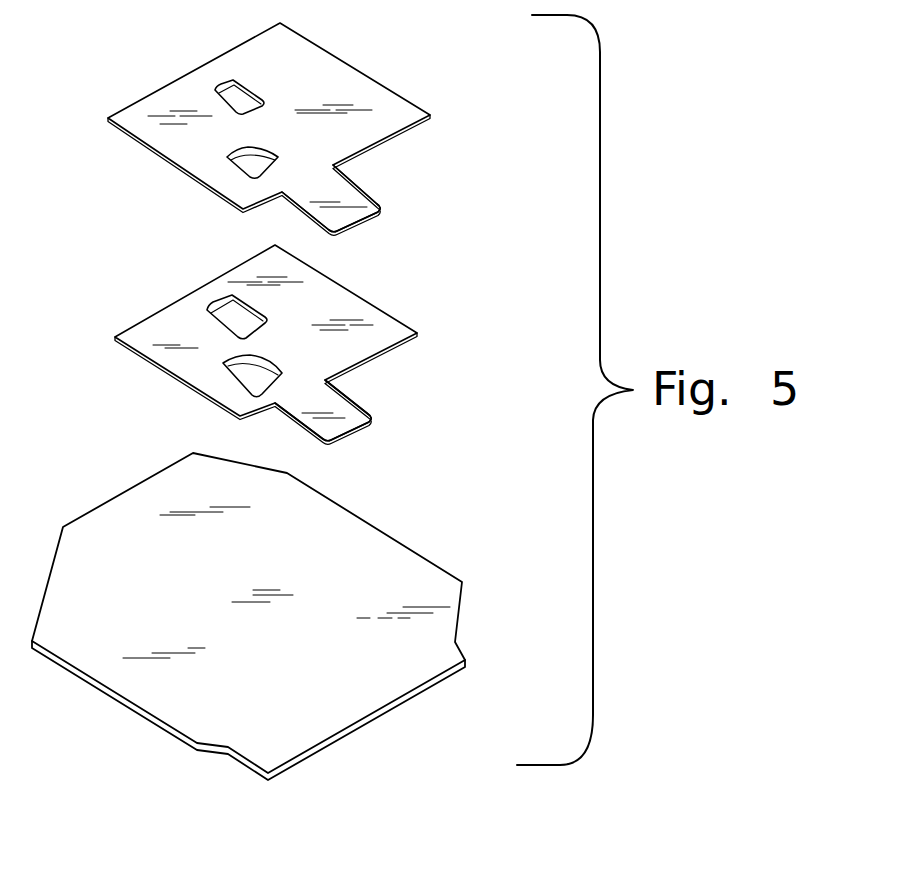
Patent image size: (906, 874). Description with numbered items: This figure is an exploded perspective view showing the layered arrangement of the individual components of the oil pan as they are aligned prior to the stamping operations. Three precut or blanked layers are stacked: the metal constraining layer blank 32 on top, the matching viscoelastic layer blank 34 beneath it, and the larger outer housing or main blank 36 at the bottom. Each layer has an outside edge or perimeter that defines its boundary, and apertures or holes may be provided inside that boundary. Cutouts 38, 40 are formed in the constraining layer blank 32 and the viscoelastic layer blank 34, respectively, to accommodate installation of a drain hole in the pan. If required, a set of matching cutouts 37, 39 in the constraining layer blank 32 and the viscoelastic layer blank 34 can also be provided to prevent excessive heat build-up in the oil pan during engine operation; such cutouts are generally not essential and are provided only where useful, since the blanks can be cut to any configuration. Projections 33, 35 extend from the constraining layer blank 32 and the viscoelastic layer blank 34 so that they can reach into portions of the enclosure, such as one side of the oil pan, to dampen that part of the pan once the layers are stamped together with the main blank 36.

The metal constraining layer blank 32 is at (405, 178).
The projection 33 is at (352, 209).
The viscoelastic layer blank 34 is at (410, 408).
The projection 35 is at (348, 424).
The main blank 36 is at (400, 750).
The cutout 37 is at (232, 95).
The cutout 38 is at (243, 162).
The cutout 39 is at (227, 312).
The cutout 40 is at (242, 380).